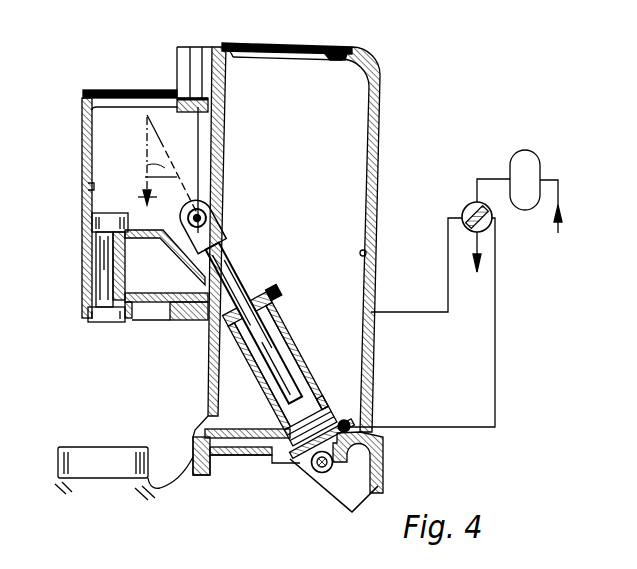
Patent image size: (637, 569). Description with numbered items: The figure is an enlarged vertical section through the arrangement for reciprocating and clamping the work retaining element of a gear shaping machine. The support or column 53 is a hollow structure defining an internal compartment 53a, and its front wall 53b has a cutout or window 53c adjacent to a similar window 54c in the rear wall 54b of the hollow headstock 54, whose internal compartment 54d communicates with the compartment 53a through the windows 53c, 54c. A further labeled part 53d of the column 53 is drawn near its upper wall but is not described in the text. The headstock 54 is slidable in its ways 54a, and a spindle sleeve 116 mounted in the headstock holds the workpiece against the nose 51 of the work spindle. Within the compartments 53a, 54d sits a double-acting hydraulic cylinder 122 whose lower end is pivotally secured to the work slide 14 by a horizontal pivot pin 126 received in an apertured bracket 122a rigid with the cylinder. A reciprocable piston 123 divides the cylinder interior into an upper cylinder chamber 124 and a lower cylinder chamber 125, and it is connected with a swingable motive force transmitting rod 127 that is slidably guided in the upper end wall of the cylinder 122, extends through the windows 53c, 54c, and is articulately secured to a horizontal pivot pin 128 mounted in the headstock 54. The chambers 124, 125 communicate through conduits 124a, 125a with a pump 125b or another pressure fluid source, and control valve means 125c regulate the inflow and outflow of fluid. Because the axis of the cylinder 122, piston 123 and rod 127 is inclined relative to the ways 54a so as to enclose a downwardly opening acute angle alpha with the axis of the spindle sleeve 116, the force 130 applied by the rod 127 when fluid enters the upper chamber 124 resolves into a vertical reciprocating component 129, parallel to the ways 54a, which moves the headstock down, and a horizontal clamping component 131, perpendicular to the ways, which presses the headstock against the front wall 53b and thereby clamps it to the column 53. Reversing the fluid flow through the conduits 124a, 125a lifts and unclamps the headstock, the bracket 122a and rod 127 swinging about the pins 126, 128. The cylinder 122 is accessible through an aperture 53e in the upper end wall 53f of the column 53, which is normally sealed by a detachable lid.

The work slide 14 is at (288, 454).
The nose of the work spindle 51 is at (124, 460).
The support or column 53 is at (311, 220).
The internal compartment 53a is at (385, 242).
The front wall 53b is at (235, 231).
The cutout or window 53c is at (281, 81).
The housing seal 53d is at (340, 70).
The aperture 53e is at (287, 31).
The upper end wall 53f is at (371, 226).
The work retaining element or headstock 54 is at (157, 180).
The ways 54a is at (176, 70).
The rear wall 54b is at (239, 170).
The cutout or window 54c is at (224, 117).
The internal compartment 54d is at (64, 185).
The spindle sleeve 116 is at (88, 277).
The double-acting fluid-operated cylinder 122 is at (301, 353).
The apertured bracket 122a is at (307, 485).
The reciprocable piston 123 is at (341, 393).
The upper cylinder chamber 124 is at (288, 326).
The conduit 124a is at (308, 291).
The lower cylinder chamber 125 is at (297, 457).
The conduit 125a is at (380, 411).
The pump 125b is at (519, 175).
The control valve means 125c is at (422, 293).
The horizontal pivot pin 126 is at (334, 486).
The motive force transmitting rod 127 is at (280, 308).
The horizontal pivot pin 128 is at (228, 213).
The vertical reciprocating component 129 is at (132, 161).
The force 130 is at (171, 164).
The horizontal clamping component 131 is at (166, 275).